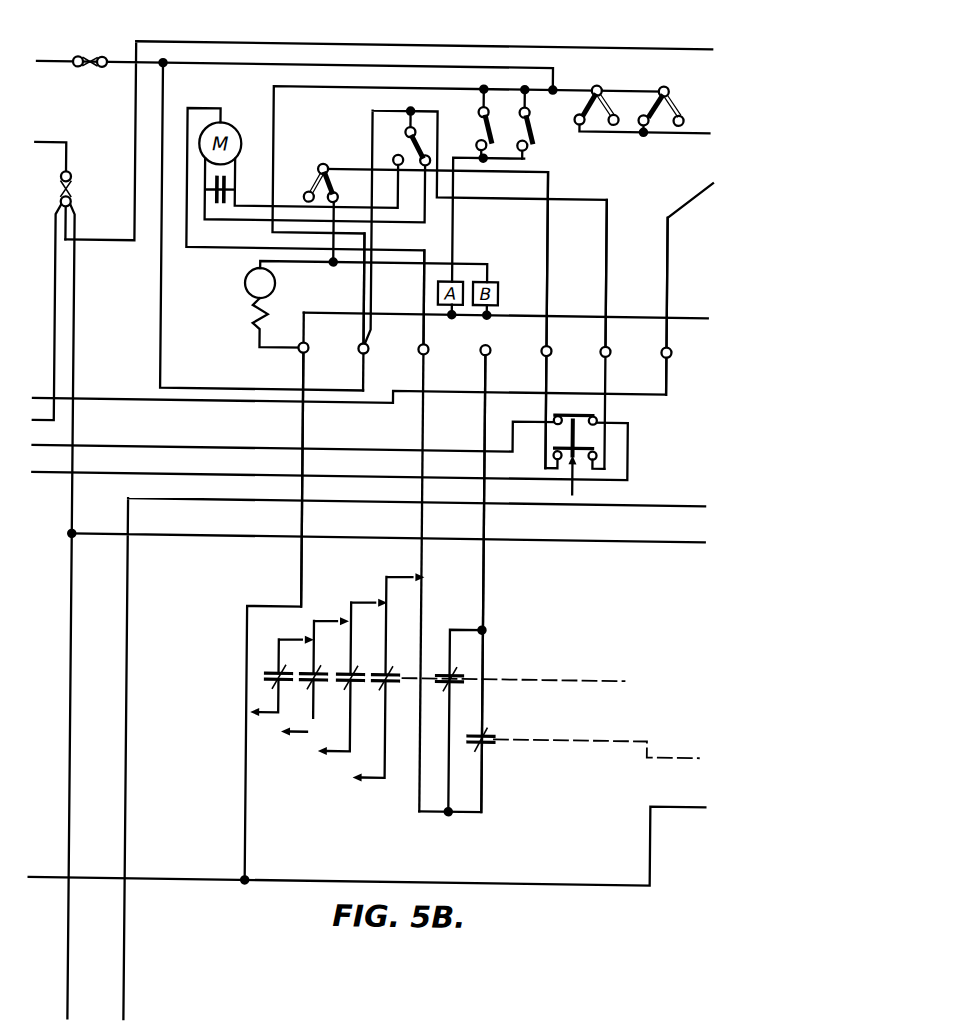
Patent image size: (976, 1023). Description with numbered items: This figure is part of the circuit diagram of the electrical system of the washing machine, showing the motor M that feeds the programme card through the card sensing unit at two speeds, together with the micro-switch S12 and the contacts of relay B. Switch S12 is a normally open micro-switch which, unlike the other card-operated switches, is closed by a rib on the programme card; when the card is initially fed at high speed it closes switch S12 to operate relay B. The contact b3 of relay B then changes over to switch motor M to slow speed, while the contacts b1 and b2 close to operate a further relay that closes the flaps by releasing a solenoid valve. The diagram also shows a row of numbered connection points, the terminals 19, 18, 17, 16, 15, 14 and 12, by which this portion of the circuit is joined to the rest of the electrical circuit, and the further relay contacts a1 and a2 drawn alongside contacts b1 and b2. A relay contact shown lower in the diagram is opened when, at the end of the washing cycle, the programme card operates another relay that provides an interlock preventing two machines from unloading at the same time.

The terminal 12 is at (657, 305).
The terminal 14 is at (596, 334).
The terminal 15 is at (536, 320).
The terminal 16 is at (472, 576).
The terminal 17 is at (412, 530).
The terminal 18 is at (354, 311).
The terminal 19 is at (293, 459).
The relay contact a1 is at (482, 126).
The relay contact a2 is at (531, 127).
The contact of relay B b1 is at (605, 99).
The contact of relay B b2 is at (670, 99).
The contact of relay B b3 is at (404, 133).
The micro-switch S12 is at (315, 191).